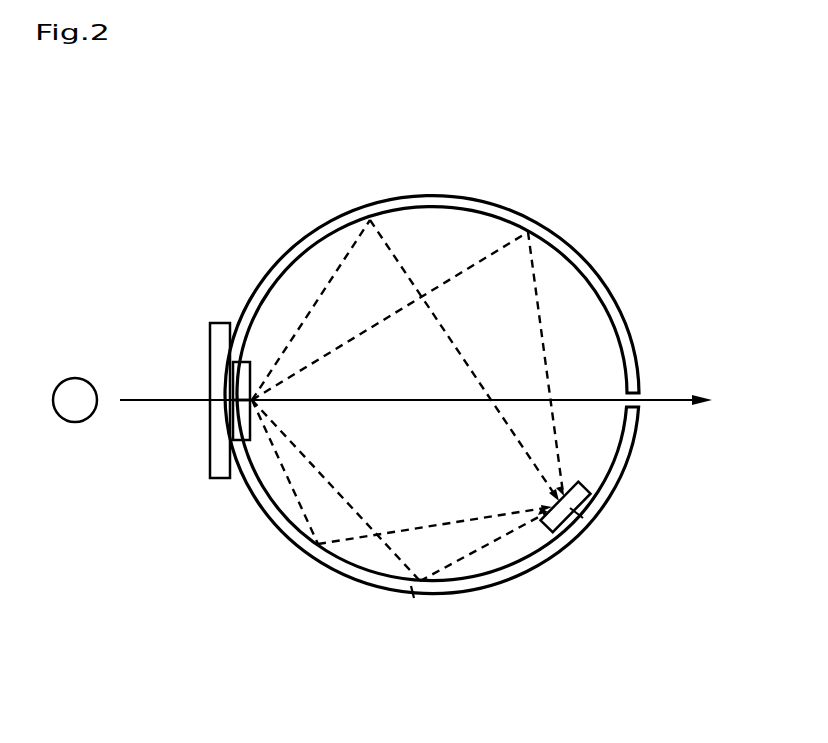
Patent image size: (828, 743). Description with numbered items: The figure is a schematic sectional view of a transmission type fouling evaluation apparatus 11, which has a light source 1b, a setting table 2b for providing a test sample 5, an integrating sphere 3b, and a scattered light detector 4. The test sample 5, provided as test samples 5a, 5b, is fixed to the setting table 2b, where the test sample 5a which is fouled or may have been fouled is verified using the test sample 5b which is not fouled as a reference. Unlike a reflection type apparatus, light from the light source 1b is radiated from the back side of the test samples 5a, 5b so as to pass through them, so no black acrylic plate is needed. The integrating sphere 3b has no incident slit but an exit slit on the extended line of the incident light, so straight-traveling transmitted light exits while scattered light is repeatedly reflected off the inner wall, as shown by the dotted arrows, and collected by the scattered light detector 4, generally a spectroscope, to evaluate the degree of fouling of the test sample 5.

The light source 1b is at (76, 422).
The setting table 2b is at (218, 478).
The integrating sphere 3b is at (612, 308).
The scattered light detector 4 is at (575, 510).
The test sample 5 is at (240, 319).
The test sample 5a is at (241, 381).
The test sample 5b is at (241, 420).
The fouling evaluation apparatus 11 is at (596, 151).